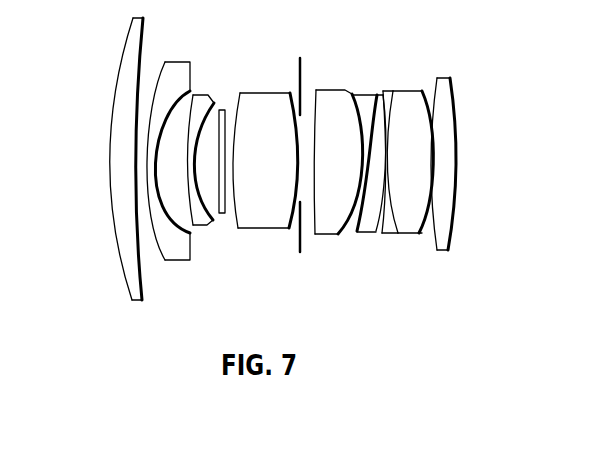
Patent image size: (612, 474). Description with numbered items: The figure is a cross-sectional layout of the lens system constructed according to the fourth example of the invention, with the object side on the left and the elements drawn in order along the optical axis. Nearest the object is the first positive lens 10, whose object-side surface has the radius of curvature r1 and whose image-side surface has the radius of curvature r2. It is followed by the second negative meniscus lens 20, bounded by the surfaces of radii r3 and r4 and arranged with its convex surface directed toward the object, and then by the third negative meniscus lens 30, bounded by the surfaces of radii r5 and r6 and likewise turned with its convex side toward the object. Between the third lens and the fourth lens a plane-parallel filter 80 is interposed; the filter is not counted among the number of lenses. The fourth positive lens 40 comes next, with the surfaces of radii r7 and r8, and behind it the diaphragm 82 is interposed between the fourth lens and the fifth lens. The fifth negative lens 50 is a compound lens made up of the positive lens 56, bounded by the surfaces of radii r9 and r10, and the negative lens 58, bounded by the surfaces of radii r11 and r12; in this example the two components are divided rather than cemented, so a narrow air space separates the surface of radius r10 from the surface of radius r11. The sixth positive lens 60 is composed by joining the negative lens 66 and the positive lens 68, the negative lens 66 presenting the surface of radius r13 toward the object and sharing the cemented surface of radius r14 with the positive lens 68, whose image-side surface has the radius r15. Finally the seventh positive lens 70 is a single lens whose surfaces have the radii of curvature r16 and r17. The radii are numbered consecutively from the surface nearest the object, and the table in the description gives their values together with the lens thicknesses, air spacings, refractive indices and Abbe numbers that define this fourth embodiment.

The first positive lens 10 is at (111, 175).
The second negative meniscus lens 20 is at (177, 158).
The third negative meniscus lens 30 is at (194, 178).
The filter 80 is at (223, 108).
The fourth positive lens 40 is at (265, 180).
The diaphragm 82 is at (302, 68).
The fifth negative lens 50 is at (344, 172).
The positive lens 56 is at (332, 180).
The negative lens 58 is at (353, 172).
The sixth positive lens 60 is at (401, 163).
The negative lens 66 is at (398, 145).
The positive lens 68 is at (413, 145).
The seventh positive lens 70 is at (463, 164).
The radius of curvature of the first surface r1 is at (127, 50).
The radius of curvature of the second surface r2 is at (139, 89).
The radius of curvature of the third surface r3 is at (160, 73).
The radius of curvature of the fourth surface r4 is at (173, 108).
The radius of curvature of the fifth surface r5 is at (187, 138).
The radius of curvature of the sixth surface r6 is at (197, 177).
The radius of curvature of the seventh surface r7 is at (237, 120).
The radius of curvature of the eighth surface r8 is at (295, 177).
The radius of curvature of the ninth surface r9 is at (317, 140).
The radius of curvature of the tenth surface r10 is at (354, 186).
The radius of curvature of the eleventh surface r11 is at (352, 93).
The radius of curvature of the twelfth surface r12 is at (360, 210).
The radius of curvature of the thirteenth surface r13 is at (384, 213).
The radius of curvature of the fourteenth surface r14 is at (392, 173).
The radius of curvature of the fifteenth surface r15 is at (430, 123).
The radius of curvature of the sixteenth surface r16 is at (437, 102).
The radius of curvature of the seventeenth surface r17 is at (455, 172).